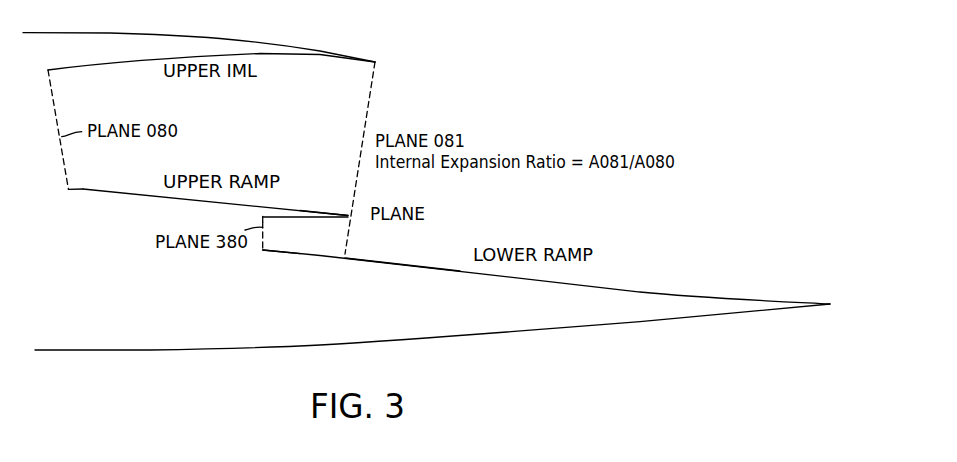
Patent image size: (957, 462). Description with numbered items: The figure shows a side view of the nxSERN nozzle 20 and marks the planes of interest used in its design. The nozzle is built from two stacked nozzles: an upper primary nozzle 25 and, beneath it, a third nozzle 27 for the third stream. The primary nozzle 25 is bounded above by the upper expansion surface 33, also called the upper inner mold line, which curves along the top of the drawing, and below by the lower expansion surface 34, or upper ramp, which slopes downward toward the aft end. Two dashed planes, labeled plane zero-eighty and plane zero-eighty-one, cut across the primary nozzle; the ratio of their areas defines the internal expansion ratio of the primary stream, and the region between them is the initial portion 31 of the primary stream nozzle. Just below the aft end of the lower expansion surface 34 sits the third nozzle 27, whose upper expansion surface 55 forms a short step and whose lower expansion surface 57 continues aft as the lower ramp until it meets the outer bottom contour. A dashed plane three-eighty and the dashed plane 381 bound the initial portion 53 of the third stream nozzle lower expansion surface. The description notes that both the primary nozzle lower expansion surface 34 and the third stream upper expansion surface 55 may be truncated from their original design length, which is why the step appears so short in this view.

The nxSERN nozzle 20 is at (504, 108).
The upper expansion surface 33 is at (277, 56).
The initial portion 31 is at (87, 190).
The primary nozzle 25 is at (137, 190).
The lower expansion surface 34 is at (295, 212).
The upper expansion surface 55 is at (305, 234).
The plane 381 is at (347, 232).
The third nozzle 27 is at (305, 246).
The initial portion 53 is at (278, 253).
The lower expansion surface 57 is at (328, 263).